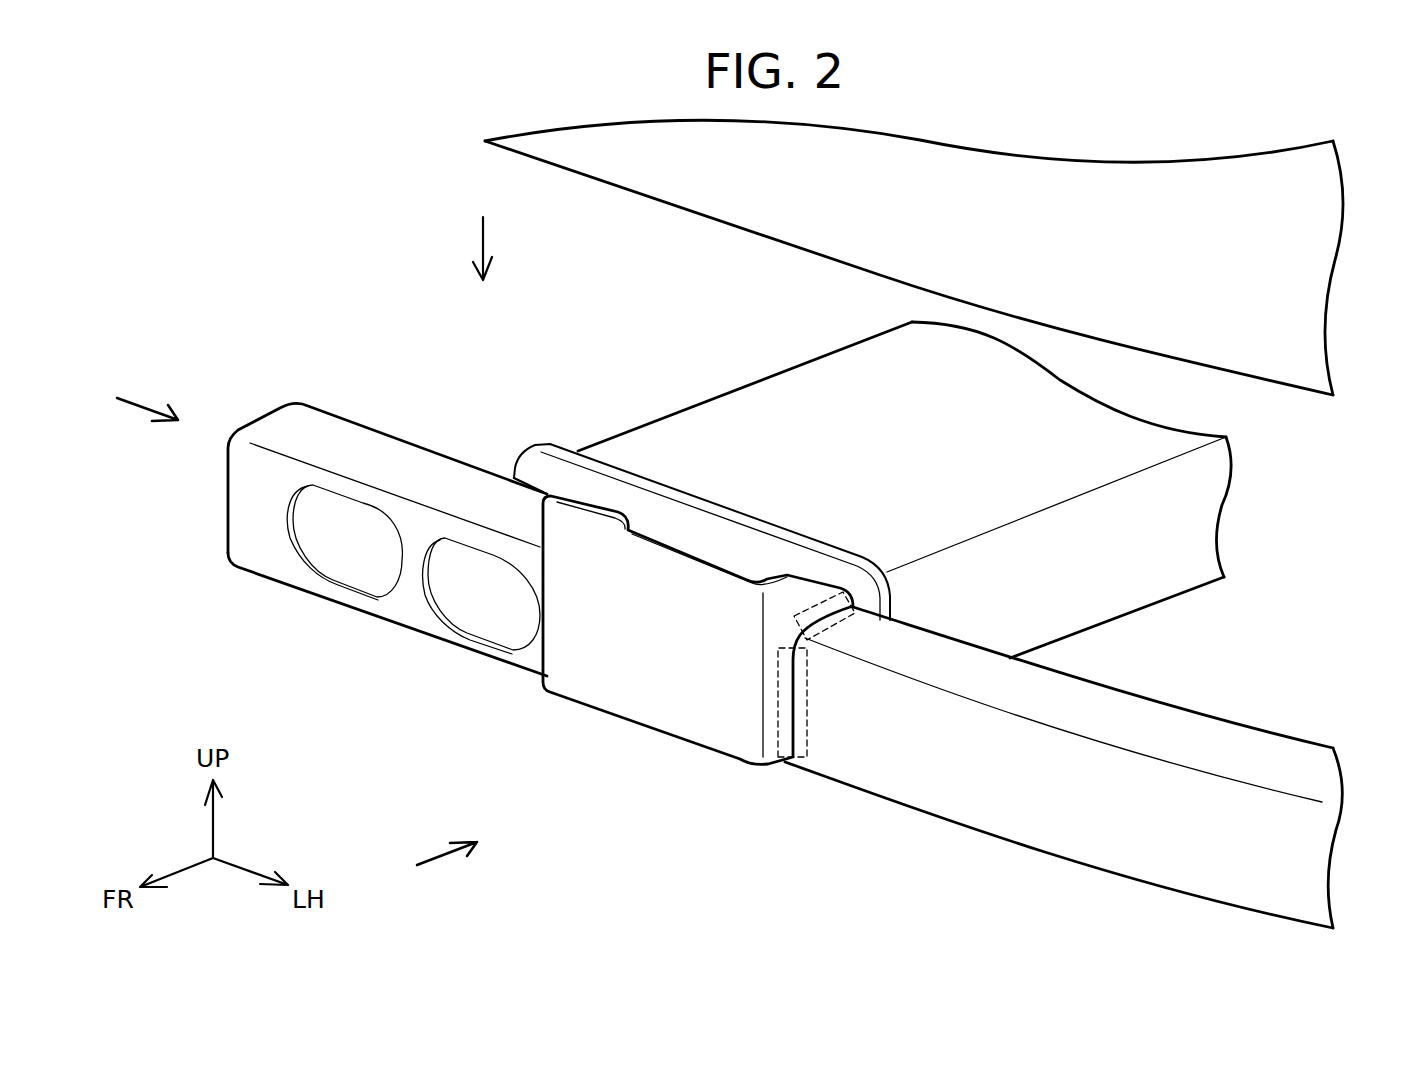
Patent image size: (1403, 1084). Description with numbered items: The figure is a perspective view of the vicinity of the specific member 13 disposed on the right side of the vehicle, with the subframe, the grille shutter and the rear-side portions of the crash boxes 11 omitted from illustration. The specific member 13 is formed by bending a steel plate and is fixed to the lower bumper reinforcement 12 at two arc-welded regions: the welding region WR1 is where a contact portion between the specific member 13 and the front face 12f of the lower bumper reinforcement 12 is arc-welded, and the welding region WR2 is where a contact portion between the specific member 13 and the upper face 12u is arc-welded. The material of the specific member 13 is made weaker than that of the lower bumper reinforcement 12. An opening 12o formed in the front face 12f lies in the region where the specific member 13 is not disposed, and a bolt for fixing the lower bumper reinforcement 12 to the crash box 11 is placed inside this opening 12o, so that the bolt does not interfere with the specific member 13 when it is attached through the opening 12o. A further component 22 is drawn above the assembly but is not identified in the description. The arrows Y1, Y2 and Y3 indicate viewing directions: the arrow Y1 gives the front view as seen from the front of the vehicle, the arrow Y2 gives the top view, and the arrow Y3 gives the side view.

The crash box 11 is at (688, 426).
The lower bumper reinforcement 12 is at (812, 679).
The upper face 12u is at (1208, 733).
The front face 12f is at (1058, 792).
The opening 12o is at (483, 596).
The specific member 13 is at (632, 700).
The panel 22 is at (1300, 302).
The welding region WR1 is at (778, 715).
The welding region WR2 is at (855, 620).
The arrow Y1 is at (440, 858).
The arrow Y2 is at (472, 238).
The arrow Y3 is at (148, 407).